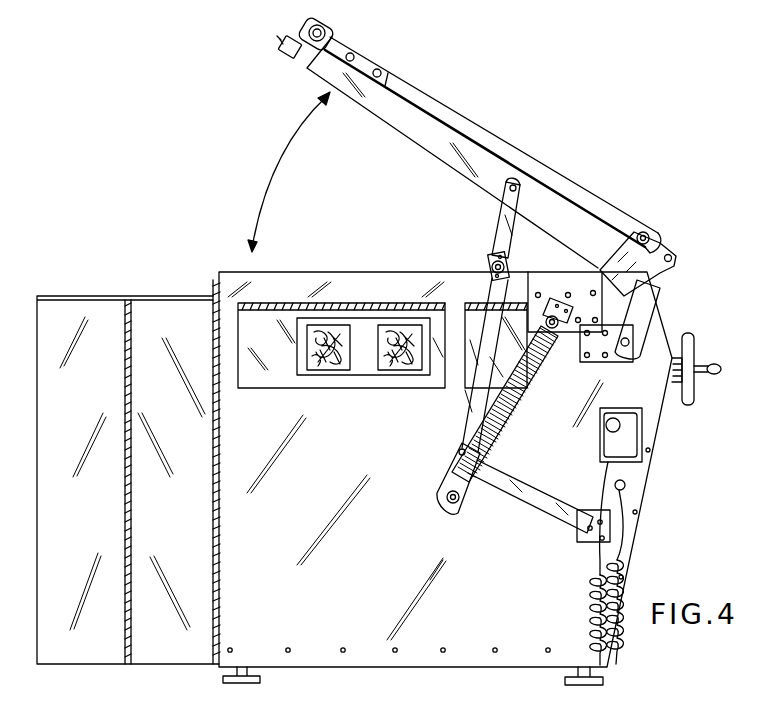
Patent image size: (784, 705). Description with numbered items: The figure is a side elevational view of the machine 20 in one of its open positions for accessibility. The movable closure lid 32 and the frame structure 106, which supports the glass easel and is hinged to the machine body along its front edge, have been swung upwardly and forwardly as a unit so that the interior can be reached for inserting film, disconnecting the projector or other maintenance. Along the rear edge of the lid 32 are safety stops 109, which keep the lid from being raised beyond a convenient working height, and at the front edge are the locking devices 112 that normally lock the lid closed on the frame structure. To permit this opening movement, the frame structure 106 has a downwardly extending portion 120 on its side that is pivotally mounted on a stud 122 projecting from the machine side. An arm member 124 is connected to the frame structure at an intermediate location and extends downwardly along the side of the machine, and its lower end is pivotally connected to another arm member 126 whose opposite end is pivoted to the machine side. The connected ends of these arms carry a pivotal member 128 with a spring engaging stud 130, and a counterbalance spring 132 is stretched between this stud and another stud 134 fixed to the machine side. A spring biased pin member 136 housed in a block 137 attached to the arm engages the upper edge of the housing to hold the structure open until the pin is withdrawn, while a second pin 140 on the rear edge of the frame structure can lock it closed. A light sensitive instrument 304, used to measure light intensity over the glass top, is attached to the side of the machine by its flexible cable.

The machine 20 is at (656, 499).
The movable closure lid 32 is at (456, 113).
The frame structure 106 is at (414, 142).
The safety stops 109 is at (310, 23).
The locking pin 140 is at (279, 37).
The locking devices 112 is at (662, 250).
The downwardly extending portions 120 is at (652, 300).
The studs 122 is at (630, 342).
The arm member 124 is at (466, 411).
The arm members 126 is at (530, 494).
The pivotal members 128 is at (440, 481).
The spring engaging studs 130 is at (455, 506).
The counterbalance spring 132 is at (510, 421).
The studs 134 is at (553, 316).
The spring biased pin member 136 is at (492, 267).
The block 137 is at (493, 256).
The light sensitive instrument 304 is at (632, 437).